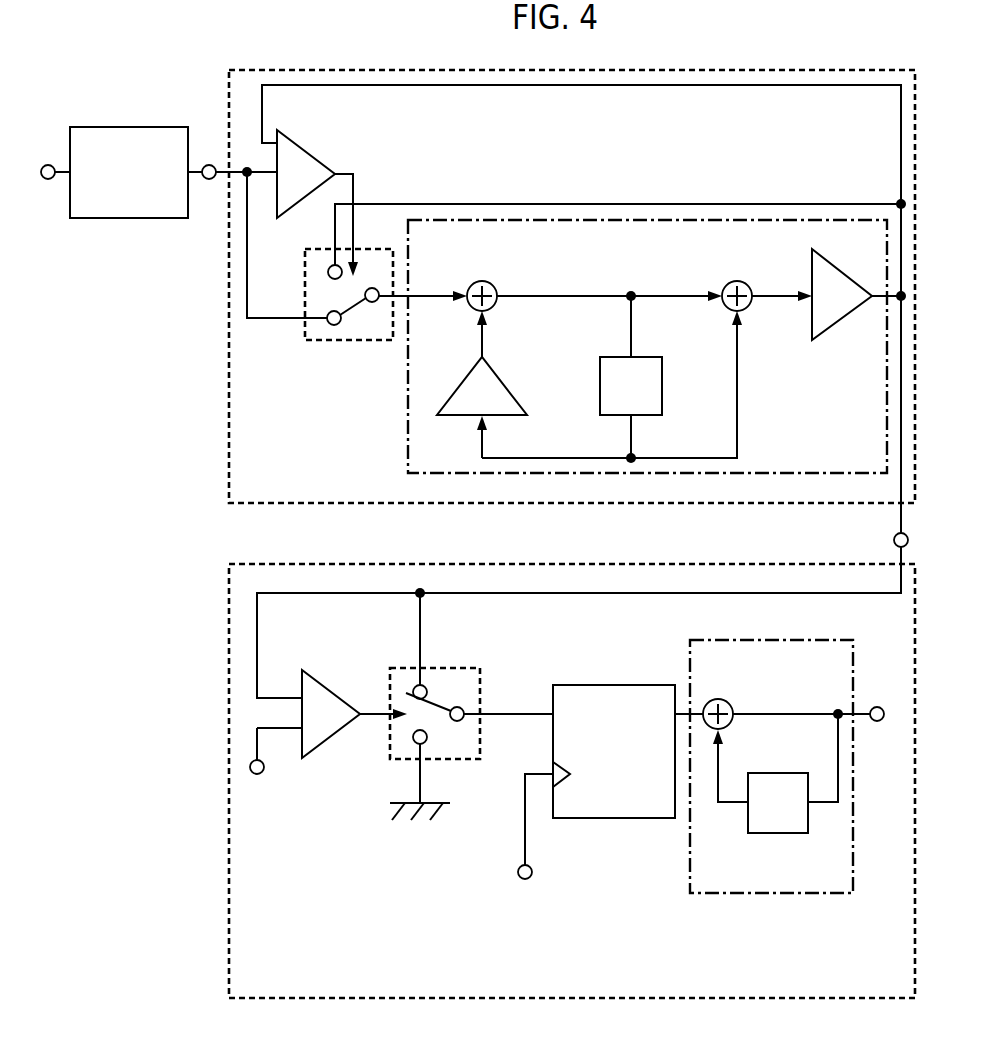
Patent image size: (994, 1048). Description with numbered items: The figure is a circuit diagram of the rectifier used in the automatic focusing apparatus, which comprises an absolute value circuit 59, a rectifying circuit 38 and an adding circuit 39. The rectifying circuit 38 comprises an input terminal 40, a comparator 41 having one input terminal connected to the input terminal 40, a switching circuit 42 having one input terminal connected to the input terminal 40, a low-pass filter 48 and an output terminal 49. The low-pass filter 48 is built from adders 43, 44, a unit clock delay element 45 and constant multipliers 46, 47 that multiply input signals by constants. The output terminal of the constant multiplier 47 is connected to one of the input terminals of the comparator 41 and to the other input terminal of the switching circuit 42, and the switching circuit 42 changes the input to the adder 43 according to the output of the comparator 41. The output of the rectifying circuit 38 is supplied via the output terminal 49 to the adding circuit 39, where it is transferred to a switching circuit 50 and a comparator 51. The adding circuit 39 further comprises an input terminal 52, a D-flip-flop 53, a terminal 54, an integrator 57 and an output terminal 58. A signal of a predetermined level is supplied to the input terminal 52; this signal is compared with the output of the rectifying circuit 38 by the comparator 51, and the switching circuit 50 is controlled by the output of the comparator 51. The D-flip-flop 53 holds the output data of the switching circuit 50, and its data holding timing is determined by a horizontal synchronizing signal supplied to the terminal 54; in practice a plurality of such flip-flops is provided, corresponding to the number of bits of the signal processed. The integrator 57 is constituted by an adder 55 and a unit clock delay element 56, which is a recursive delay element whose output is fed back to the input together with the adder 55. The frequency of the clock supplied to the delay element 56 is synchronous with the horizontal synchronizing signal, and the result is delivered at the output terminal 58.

The rectifying circuit 38 is at (657, 69).
The adding circuit 39 is at (420, 998).
The input terminal 40 is at (209, 165).
The comparator 41 is at (298, 158).
The switching circuit 42 is at (367, 343).
The adder 43 is at (487, 282).
The adder 44 is at (745, 281).
The unit clock delay element 45 is at (662, 380).
The constant multiplier 46 is at (477, 393).
The constant multiplier 47 is at (852, 277).
The low-pass filter 48 is at (452, 220).
The output terminal 49 is at (893, 539).
The switching circuit 50 is at (443, 668).
The comparator 51 is at (318, 740).
The input terminal 52 is at (263, 770).
The D-flip-flop 53 is at (608, 685).
The terminal 54 is at (530, 878).
The adder 55 is at (725, 702).
The unit clock delay element 56 is at (808, 783).
The integrator 57 is at (788, 640).
The output terminal 58 is at (873, 705).
The absolute value circuit 59 is at (130, 127).